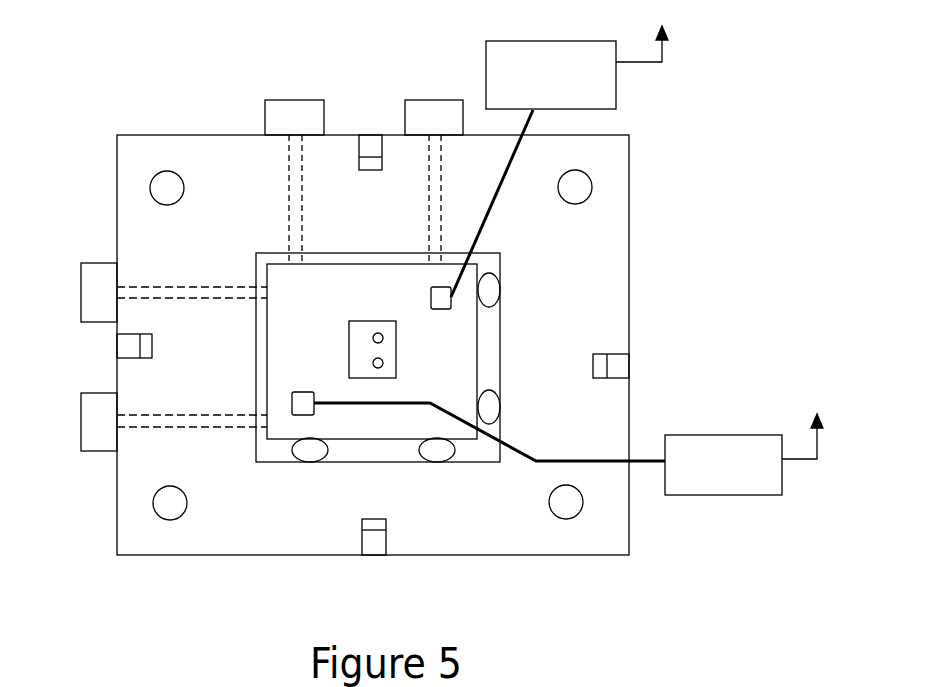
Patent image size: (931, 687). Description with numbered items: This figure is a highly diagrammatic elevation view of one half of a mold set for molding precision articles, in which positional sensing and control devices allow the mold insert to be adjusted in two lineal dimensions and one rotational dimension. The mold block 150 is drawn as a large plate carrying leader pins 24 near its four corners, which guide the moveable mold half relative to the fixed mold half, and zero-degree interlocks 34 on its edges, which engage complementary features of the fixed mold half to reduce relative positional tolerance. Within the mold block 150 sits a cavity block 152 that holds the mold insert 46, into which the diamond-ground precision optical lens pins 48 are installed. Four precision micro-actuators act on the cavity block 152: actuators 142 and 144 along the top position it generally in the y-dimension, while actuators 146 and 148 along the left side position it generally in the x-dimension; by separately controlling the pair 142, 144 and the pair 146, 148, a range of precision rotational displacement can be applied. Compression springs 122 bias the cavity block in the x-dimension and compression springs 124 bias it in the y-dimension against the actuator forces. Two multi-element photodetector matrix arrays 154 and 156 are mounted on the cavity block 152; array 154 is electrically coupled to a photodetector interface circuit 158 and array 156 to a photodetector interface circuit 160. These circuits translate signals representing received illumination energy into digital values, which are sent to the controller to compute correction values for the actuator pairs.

The leader pins 24 is at (173, 191).
The zero-degree interlocks 34 is at (366, 165).
The mold insert 46 is at (355, 353).
The precision optical lens pins 48 is at (378, 333).
The compression springs 122 is at (487, 303).
The compression springs 124 is at (427, 452).
The actuator 142 is at (307, 103).
The actuator 144 is at (447, 106).
The actuator 146 is at (92, 292).
The actuator 148 is at (97, 415).
The mold block 150 is at (153, 546).
The cavity block 152 is at (278, 268).
The photodetector matrix array 154 is at (318, 367).
The photodetector matrix array 156 is at (460, 323).
The photodetector interface circuit 158 is at (776, 495).
The photodetector interface circuit 160 is at (598, 108).